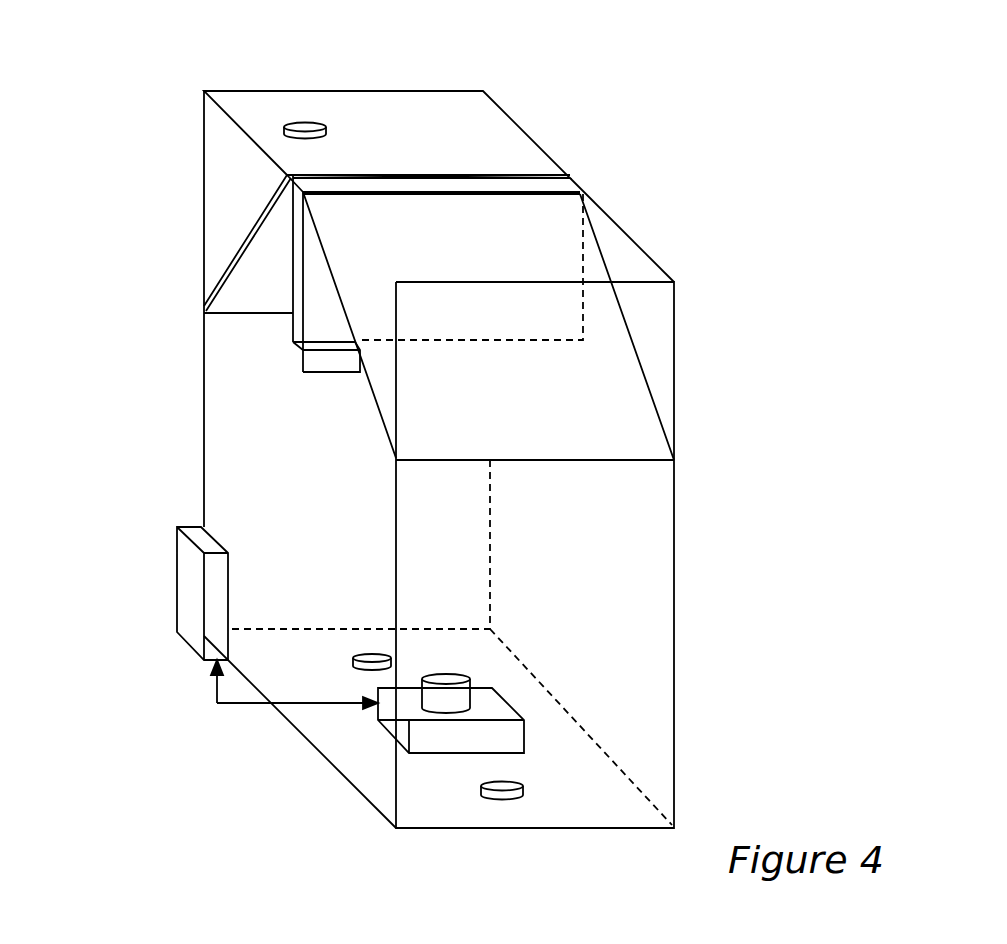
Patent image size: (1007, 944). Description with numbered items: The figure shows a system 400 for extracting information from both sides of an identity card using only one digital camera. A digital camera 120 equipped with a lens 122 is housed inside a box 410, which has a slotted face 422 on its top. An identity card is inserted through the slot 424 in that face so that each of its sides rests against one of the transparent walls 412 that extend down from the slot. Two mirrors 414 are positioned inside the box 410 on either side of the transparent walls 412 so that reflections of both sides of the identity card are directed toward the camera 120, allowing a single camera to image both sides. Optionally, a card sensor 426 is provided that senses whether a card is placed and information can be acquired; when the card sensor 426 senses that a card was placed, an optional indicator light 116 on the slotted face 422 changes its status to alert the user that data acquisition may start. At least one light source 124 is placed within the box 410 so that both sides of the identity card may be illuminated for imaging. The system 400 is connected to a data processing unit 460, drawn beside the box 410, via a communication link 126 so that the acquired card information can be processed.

The system 400 is at (850, 253).
The indicator light 116 is at (305, 122).
The slotted face 422 is at (493, 100).
The slot 424 is at (567, 183).
The mirrors 414 is at (235, 252).
The transparent wall 412 is at (293, 275).
The card sensor 426 is at (293, 357).
The box 410 is at (674, 372).
The data processing unit 460 is at (188, 612).
The communication link 126 is at (217, 689).
The digital camera 120 is at (389, 715).
The lens 122 is at (452, 678).
The light source 124 is at (393, 660).